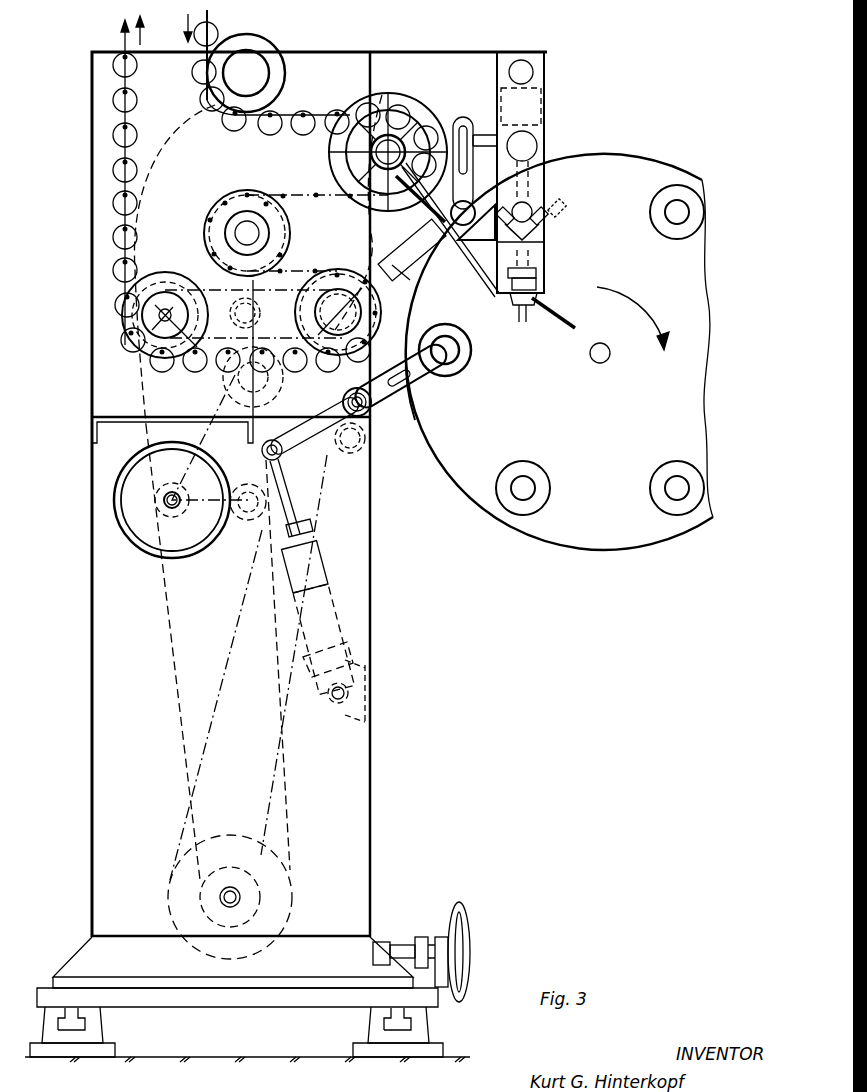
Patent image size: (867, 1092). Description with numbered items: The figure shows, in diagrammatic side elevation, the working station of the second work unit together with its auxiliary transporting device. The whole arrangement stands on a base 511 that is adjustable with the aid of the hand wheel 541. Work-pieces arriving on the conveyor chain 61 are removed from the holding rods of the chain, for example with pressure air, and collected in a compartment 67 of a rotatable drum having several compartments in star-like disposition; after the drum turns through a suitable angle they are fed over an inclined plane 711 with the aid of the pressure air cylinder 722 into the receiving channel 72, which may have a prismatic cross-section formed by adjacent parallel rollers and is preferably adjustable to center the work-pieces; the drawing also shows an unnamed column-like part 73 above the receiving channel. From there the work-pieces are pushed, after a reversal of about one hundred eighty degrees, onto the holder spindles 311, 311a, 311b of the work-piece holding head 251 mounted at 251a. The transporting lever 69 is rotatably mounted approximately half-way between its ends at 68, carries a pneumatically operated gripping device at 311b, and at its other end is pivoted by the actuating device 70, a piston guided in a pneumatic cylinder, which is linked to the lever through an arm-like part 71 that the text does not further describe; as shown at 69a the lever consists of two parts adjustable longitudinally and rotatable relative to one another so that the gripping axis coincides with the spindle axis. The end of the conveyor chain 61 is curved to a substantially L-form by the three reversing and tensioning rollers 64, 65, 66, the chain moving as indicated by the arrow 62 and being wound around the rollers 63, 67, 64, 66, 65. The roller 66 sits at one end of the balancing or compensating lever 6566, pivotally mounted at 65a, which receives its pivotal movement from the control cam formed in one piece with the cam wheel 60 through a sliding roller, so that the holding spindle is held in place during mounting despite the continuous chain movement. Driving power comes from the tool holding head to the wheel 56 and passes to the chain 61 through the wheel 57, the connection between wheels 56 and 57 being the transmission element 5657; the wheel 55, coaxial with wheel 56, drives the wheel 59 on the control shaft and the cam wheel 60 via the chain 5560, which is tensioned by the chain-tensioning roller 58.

The wheel 55 is at (378, 872).
The base 511 is at (78, 950).
The hand wheel 541 is at (478, 918).
The wheel 56 is at (229, 868).
The wheel 57 is at (172, 134).
The transmission element 5657 is at (165, 655).
The chain 5560 is at (237, 632).
The chain-tensioning roller 58 is at (245, 520).
The wheel 59 is at (181, 494).
The cam wheel 60 is at (268, 373).
The conveyor chain 61 is at (122, 45).
The arrow 62 is at (145, 22).
The roller 63 is at (270, 44).
The reversing and tensioning roller 64 is at (222, 196).
The reversing and tensioning roller 65 is at (124, 313).
The pivot mounting of compensating lever 65a is at (127, 353).
The balancing or compensating lever 6566 is at (208, 287).
The reversing and tensioning roller 66 is at (380, 312).
The compartment of rotatable drum 67 is at (410, 106).
The pivot of transporting lever 68 is at (365, 414).
The transporting lever 69 is at (428, 388).
The two-part transporting lever connection 69a is at (412, 398).
The actuating device 70 is at (330, 575).
The arm 71 is at (285, 460).
The receiving channel 72 is at (540, 214).
The inclined plane 711 is at (345, 185).
The pressure air cylinder 722 is at (402, 255).
The column 73 is at (545, 76).
The work-piece holding head 251 is at (585, 545).
The mounting of holding head 251a is at (605, 362).
The holder spindle 311 is at (678, 510).
The holder spindle 311a is at (515, 505).
The holder spindle / gripping device end 311b is at (466, 364).